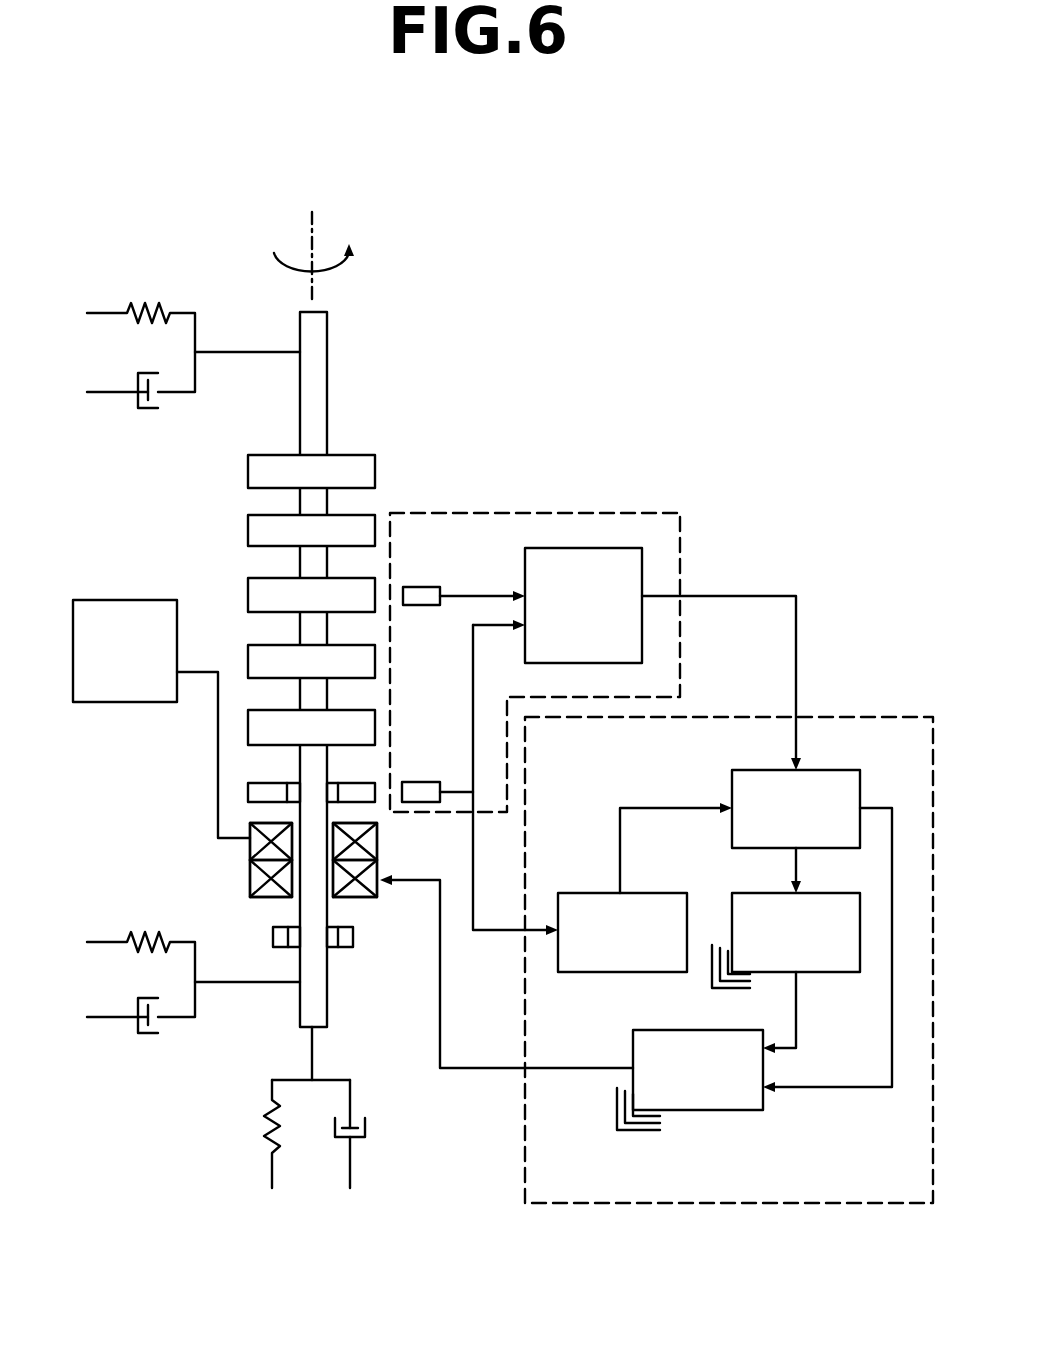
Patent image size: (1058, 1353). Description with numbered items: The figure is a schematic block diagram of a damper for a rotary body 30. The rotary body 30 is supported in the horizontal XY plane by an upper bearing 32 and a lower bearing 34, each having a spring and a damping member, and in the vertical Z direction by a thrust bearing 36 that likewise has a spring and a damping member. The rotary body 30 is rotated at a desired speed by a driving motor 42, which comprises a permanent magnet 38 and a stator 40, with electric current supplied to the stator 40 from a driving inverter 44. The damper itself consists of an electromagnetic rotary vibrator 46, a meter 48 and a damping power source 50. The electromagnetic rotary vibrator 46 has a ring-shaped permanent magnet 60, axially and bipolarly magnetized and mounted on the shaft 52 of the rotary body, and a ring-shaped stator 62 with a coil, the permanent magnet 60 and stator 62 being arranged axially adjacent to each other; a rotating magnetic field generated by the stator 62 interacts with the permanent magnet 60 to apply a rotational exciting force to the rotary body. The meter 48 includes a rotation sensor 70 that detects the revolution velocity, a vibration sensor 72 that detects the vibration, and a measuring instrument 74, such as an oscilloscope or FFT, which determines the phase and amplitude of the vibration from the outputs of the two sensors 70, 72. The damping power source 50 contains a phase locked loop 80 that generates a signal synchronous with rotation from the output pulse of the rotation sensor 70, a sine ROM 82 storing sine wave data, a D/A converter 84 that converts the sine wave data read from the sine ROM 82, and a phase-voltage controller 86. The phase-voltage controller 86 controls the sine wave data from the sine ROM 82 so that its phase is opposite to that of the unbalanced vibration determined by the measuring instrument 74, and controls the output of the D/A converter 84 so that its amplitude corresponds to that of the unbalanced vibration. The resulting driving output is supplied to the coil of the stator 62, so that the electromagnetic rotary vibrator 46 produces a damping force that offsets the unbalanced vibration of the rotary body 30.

The rotary body 30 is at (383, 482).
The upper bearing 32 is at (137, 288).
The lower bearing 34 is at (98, 1036).
The thrust bearing 36 is at (249, 1158).
The permanent magnet 38 is at (280, 746).
The stator 40 is at (378, 846).
The driving motor 42 is at (208, 780).
The driving inverter 44 is at (104, 703).
The electromagnetic rotary vibrator 46 is at (228, 862).
The meter 48 is at (632, 514).
The damping power source 50 is at (844, 717).
The shaft 52 is at (322, 1022).
The permanent magnet 60 is at (355, 937).
The stator 62 is at (262, 898).
The rotation sensor 70 is at (420, 782).
The vibration sensor 72 is at (424, 587).
The measuring instrument 74 is at (548, 548).
The phase locked loop 80 is at (576, 893).
The sine ROM 82 is at (843, 972).
The D/A converter 84 is at (740, 1110).
The phase-voltage controller 86 is at (732, 782).